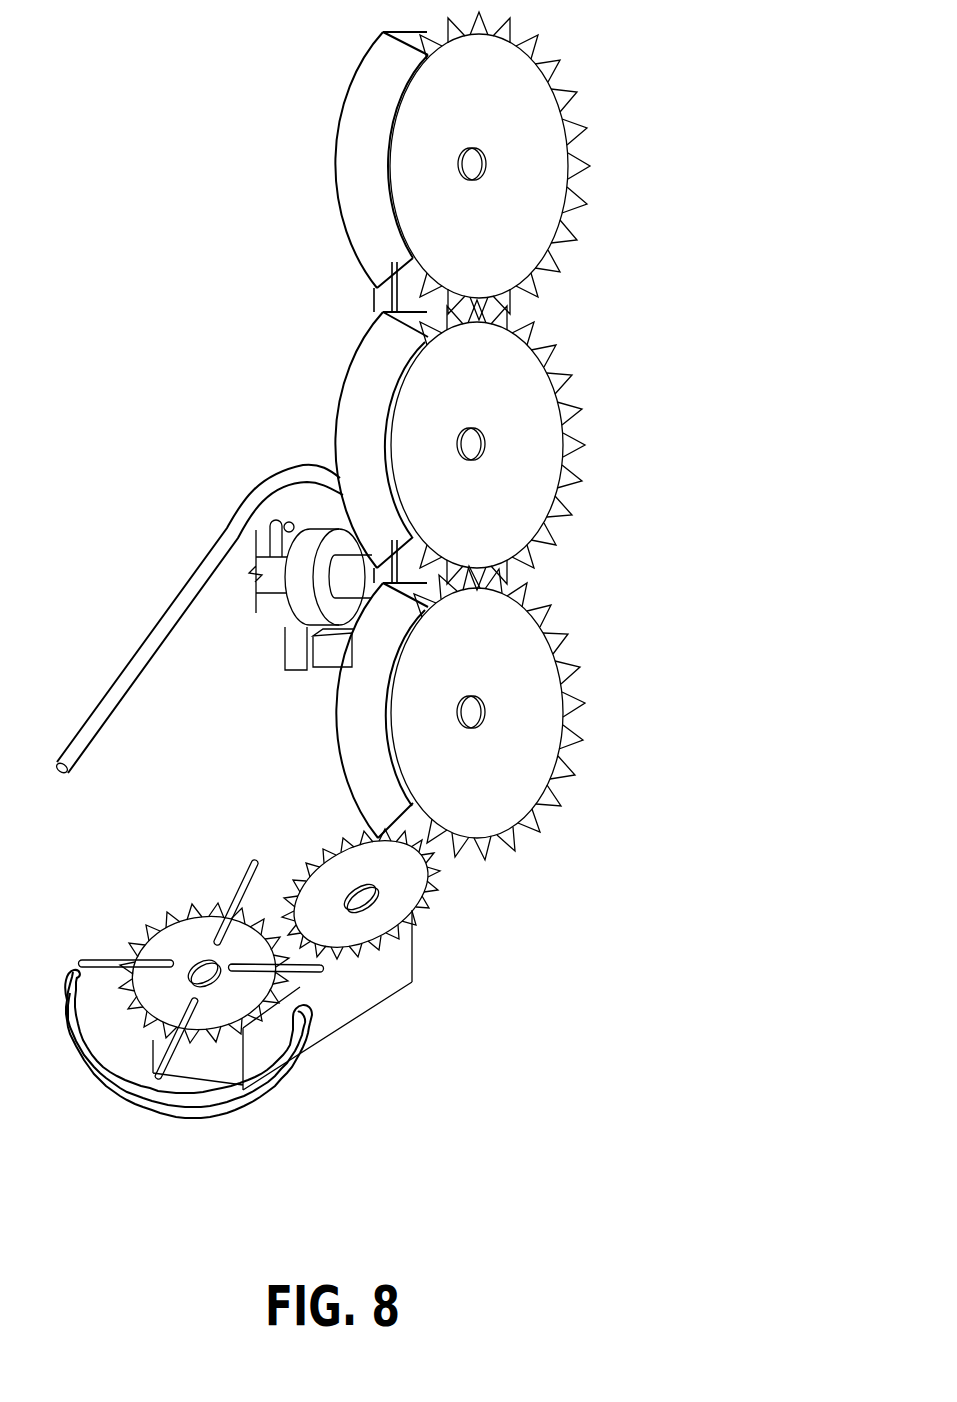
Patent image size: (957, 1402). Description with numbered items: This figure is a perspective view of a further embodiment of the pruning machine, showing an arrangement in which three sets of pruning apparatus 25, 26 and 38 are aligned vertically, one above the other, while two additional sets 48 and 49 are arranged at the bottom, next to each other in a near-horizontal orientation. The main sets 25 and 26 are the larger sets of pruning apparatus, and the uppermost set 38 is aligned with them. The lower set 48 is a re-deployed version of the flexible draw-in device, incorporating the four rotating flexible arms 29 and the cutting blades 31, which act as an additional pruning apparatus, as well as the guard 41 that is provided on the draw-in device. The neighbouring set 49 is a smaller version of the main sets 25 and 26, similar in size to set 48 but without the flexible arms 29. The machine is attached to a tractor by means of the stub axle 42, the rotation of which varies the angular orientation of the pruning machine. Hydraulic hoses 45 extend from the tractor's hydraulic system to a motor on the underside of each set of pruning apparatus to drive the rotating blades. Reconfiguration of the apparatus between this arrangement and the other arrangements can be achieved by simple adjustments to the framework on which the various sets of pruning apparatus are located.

The set of pruning apparatus 38 is at (538, 185).
The set of pruning apparatus 26 is at (523, 502).
The set of pruning apparatus 25 is at (532, 732).
The stub axle 42 is at (353, 573).
The hydraulic hoses 45 is at (150, 678).
The flexible arms 29 is at (258, 866).
The blades 31 is at (218, 912).
The set of pruning apparatus 48 is at (189, 936).
The set of pruning apparatus 49 is at (402, 888).
The guard 41 is at (143, 1118).